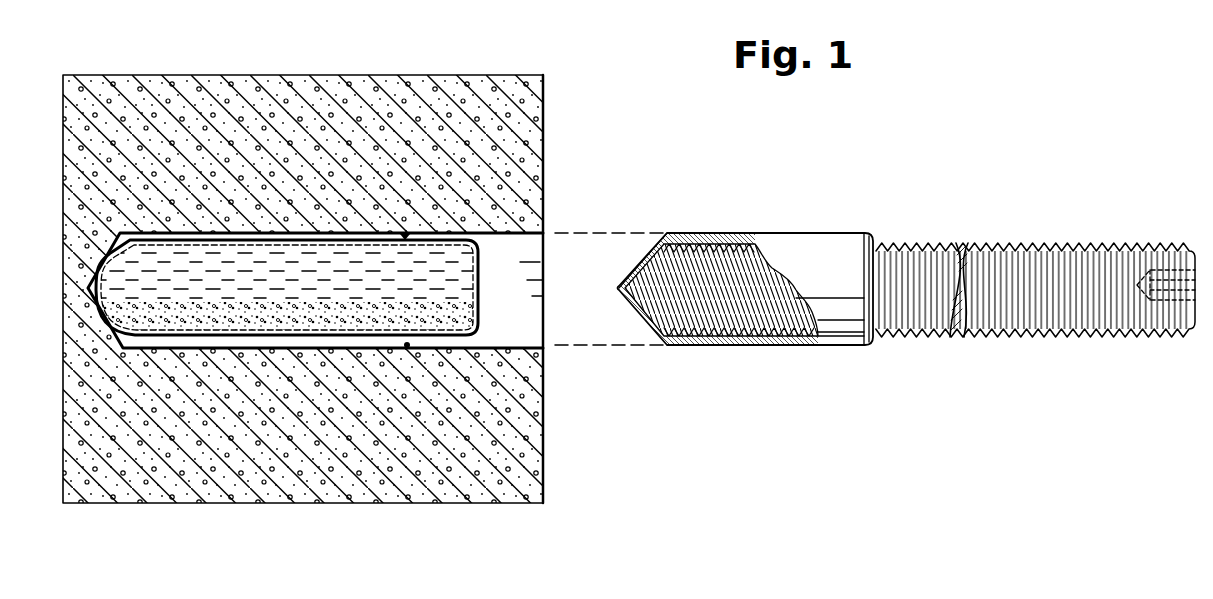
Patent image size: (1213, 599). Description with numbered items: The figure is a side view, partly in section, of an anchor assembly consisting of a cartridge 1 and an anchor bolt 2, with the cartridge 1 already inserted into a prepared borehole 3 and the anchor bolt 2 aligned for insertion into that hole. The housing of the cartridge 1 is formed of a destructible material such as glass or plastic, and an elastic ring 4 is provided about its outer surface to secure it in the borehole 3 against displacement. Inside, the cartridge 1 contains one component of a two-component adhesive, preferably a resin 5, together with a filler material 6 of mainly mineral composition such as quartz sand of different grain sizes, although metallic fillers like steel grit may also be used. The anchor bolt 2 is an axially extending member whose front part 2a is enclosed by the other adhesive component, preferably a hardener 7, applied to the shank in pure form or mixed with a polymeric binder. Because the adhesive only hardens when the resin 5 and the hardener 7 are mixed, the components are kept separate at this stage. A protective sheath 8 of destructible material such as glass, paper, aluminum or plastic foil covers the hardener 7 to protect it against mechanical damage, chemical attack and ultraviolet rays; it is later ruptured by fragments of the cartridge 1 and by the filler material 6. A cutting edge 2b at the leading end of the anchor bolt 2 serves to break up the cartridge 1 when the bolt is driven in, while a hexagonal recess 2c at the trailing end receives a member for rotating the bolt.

The cartridge 1 is at (207, 236).
The anchor bolt 2 is at (1006, 243).
The front part 2a is at (682, 342).
The cutting edge 2b is at (624, 282).
The hexagonal recess 2c is at (1152, 265).
The borehole 3 is at (490, 345).
The elastic ring 4 is at (406, 350).
The resin 5 is at (463, 268).
The filler material 6 is at (268, 322).
The hardener 7 is at (760, 338).
The protective sheath 8 is at (697, 233).